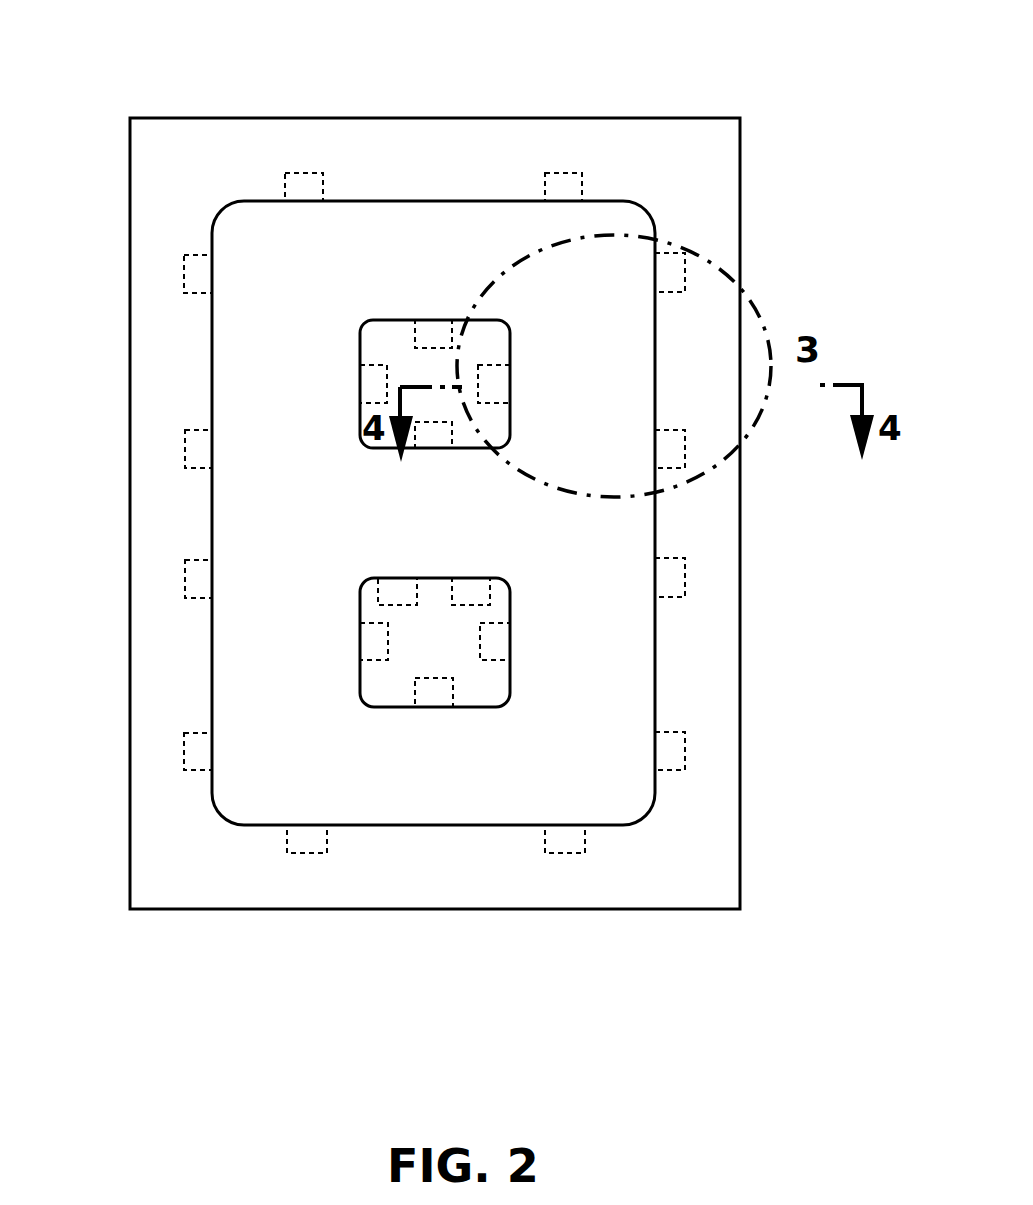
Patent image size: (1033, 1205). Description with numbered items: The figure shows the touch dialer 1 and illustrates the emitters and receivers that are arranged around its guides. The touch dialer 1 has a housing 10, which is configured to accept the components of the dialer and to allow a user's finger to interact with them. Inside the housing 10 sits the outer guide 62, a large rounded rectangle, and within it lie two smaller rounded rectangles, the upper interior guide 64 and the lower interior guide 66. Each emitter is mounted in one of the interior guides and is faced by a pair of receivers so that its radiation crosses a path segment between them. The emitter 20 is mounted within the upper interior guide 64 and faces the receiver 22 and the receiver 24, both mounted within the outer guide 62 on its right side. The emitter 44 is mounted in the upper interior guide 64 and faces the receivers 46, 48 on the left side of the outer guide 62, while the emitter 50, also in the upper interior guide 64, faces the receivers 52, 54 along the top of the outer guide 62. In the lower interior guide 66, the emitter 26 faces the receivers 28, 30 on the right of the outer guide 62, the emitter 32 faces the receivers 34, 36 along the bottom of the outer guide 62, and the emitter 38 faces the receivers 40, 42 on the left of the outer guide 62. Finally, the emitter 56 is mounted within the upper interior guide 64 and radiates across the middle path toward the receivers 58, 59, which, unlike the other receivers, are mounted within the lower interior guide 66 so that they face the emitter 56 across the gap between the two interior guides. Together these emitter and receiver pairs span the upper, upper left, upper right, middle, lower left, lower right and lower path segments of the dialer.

The touch dialer 1 is at (728, 100).
The housing 10 is at (740, 170).
The outer guide 62 is at (437, 145).
The upper interior guide 64 is at (388, 343).
The lower interior guide 66 is at (388, 680).
The emitter 20 is at (495, 383).
The receiver 22 is at (685, 272).
The receiver 24 is at (685, 450).
The emitter 26 is at (492, 644).
The receiver 28 is at (685, 580).
The receiver 30 is at (685, 752).
The emitter 32 is at (435, 690).
The receiver 34 is at (557, 853).
The receiver 36 is at (307, 853).
The emitter 38 is at (368, 643).
The receiver 40 is at (185, 582).
The receiver 42 is at (185, 757).
The emitter 44 is at (372, 383).
The receiver 46 is at (185, 450).
The receiver 48 is at (185, 278).
The emitter 50 is at (433, 335).
The receiver 52 is at (305, 173).
The receiver 54 is at (567, 173).
The emitter 56 is at (432, 440).
The receiver 58 is at (470, 590).
The receiver 59 is at (398, 594).